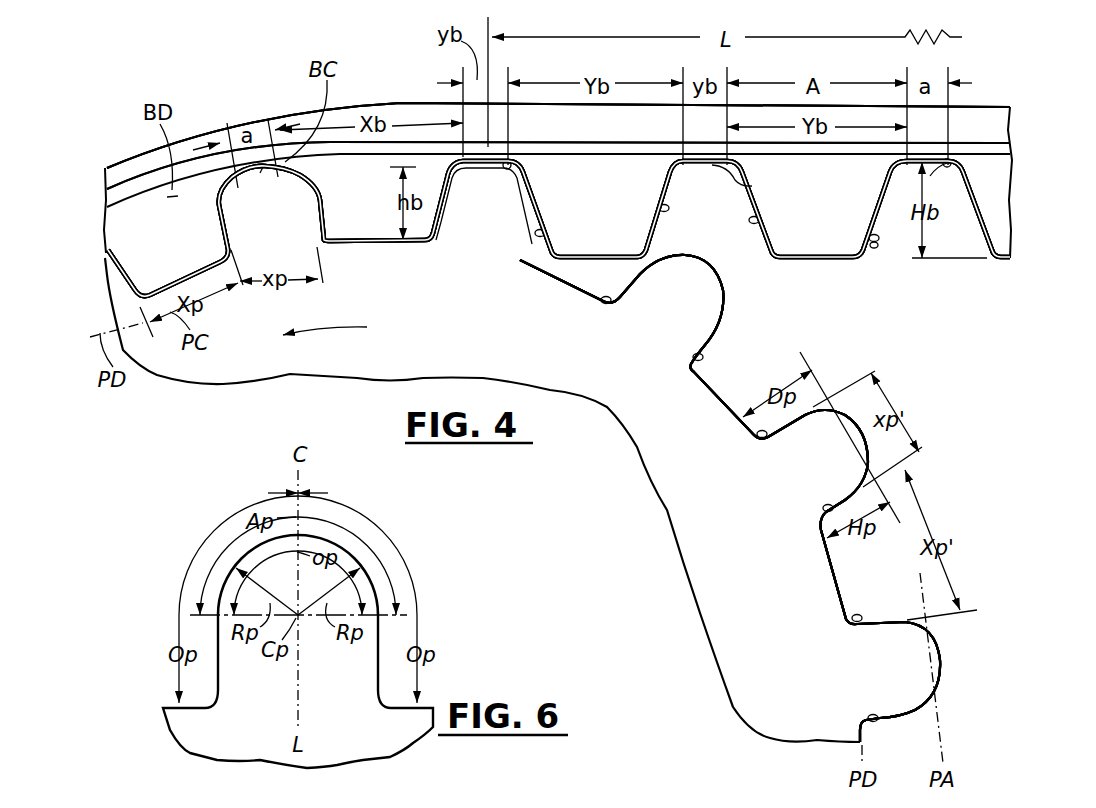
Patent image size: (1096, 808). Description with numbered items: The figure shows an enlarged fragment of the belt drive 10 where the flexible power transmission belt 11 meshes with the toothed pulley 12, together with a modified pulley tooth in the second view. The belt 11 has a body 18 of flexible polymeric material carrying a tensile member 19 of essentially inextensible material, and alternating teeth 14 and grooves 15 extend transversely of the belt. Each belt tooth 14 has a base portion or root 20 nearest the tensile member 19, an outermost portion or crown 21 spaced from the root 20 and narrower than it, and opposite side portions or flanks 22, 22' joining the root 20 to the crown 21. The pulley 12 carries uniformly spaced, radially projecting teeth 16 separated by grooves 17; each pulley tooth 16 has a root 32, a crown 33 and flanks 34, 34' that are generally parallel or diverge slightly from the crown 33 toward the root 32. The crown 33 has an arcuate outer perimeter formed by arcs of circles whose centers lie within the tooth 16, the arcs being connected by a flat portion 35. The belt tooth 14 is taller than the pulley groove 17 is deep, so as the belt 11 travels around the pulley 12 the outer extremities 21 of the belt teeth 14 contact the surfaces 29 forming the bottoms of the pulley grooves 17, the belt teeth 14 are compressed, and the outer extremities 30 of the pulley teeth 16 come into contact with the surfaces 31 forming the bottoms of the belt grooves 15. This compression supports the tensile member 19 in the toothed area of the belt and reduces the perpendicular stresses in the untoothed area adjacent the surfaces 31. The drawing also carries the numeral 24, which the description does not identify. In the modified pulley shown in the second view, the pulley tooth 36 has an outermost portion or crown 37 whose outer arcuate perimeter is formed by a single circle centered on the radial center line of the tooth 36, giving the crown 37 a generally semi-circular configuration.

In FIG. 4, the belt drive 10 is at (235, 115).
In FIG. 4, the flexible power transmission belt 11 is at (300, 118).
In FIG. 4, the toothed driving pulley 12 is at (207, 357).
In FIG. 4, the belt teeth 14 is at (203, 222).
In FIG. 4, the belt grooves 15 is at (313, 185).
In FIG. 4, the pulley teeth 16 is at (298, 223).
In FIG. 4, the pulley grooves 17 is at (123, 277).
In FIG. 4, the belt body 18 is at (990, 117).
In FIG. 4, the tensile member 19 is at (420, 145).
In FIG. 4, the base portion or root of belt tooth 20 is at (145, 150).
In FIG. 4, the outermost portion or crown of belt tooth 21 is at (382, 245).
In FIG. 4, the flanks of belt tooth 22 is at (743, 217).
In FIG. 4, the fabric facing on tooth 22' is at (559, 228).
In FIG. 4, the fabric thread 24 is at (876, 248).
In FIG. 4, the pulley dedendum surfaces 29 is at (368, 243).
In FIG. 4, the outer extremities of pulley teeth 30 is at (520, 170).
In FIG. 4, the belt addendum surfaces 31 is at (508, 165).
In FIG. 4, the base portion or root of pulley tooth 32 is at (259, 250).
In FIG. 4, the outermost portion or crown of pulley tooth 33 is at (527, 188).
In FIG. 4, the flank of pulley tooth 34 is at (649, 412).
In FIG. 4, the flank of pulley tooth 34' is at (496, 466).
In FIG. 4, the flat portion 35 is at (260, 173).
In FIG. 6, the modified pulley tooth 36 is at (347, 668).
In FIG. 6, the crown of modified pulley tooth 37 is at (310, 540).